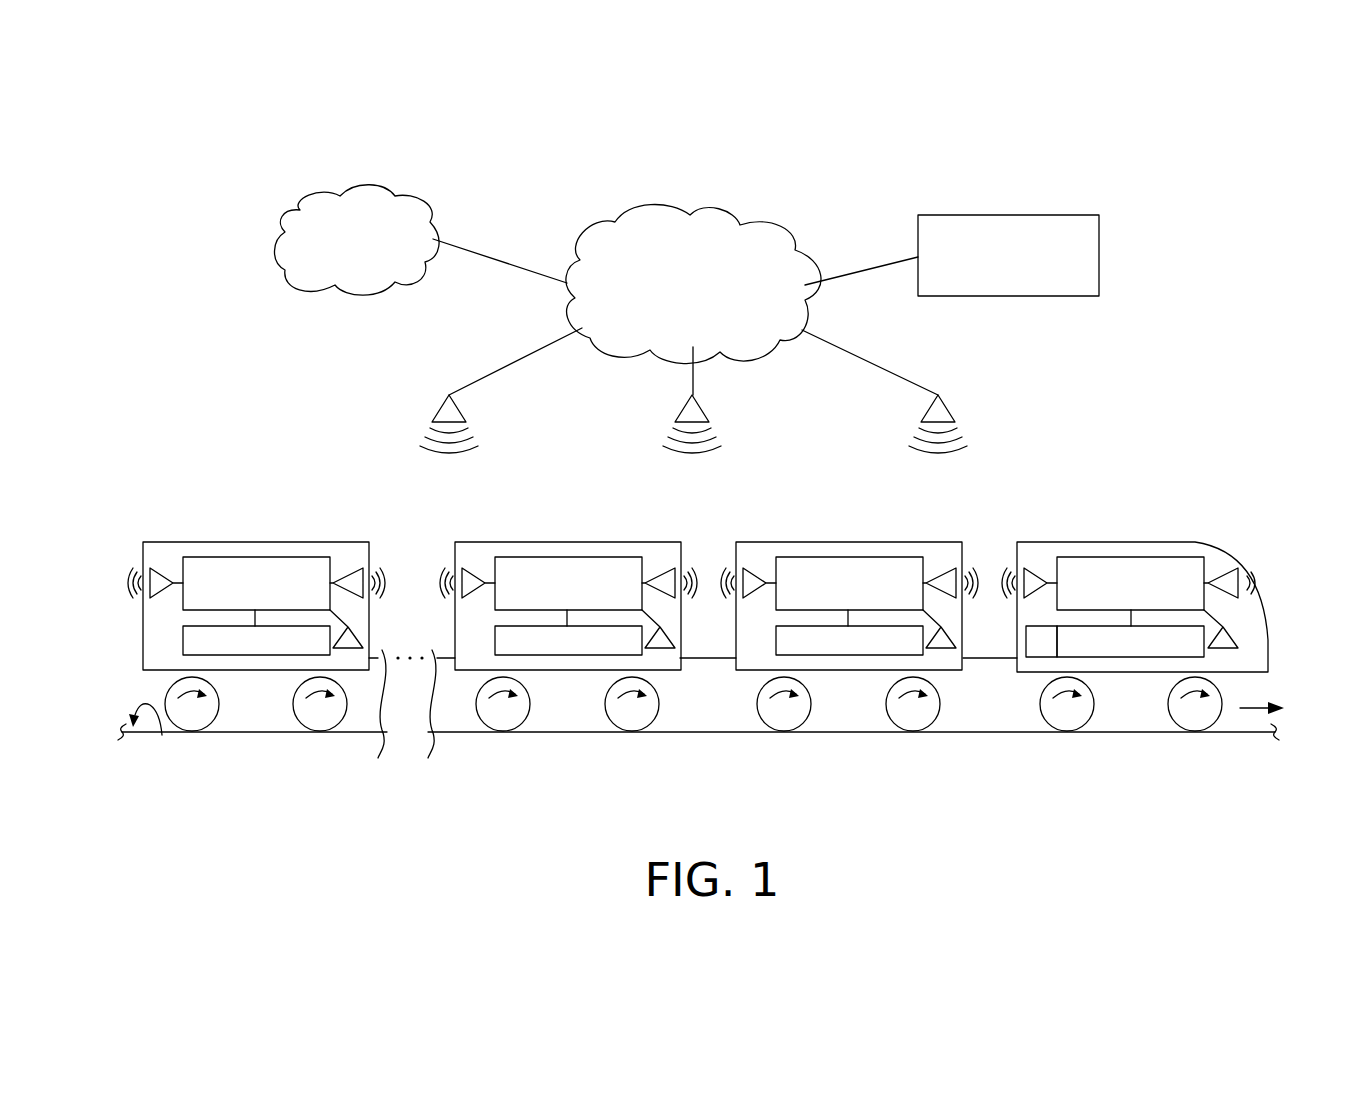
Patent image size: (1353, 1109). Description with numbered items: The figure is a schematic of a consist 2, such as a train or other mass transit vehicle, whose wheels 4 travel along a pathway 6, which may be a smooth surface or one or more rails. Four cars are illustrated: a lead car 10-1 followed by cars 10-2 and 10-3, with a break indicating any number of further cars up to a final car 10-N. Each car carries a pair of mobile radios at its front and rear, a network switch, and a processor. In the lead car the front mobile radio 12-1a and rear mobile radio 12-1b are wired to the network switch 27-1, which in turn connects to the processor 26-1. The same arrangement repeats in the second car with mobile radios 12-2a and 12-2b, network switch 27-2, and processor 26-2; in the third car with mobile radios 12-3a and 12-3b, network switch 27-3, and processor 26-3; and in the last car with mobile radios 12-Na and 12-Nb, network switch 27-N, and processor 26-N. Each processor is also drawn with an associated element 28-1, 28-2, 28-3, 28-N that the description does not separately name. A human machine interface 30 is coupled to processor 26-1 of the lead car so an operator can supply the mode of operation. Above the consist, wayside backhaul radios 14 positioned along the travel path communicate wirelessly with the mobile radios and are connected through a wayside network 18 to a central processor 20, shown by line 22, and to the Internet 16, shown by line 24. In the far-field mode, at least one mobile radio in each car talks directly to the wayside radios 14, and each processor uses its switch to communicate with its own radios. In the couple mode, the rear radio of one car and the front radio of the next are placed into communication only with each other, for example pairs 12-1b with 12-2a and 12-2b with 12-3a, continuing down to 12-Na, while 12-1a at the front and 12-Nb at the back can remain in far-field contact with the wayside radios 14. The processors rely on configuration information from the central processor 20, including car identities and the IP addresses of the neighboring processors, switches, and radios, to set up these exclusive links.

The consist 2 is at (298, 398).
The wheels 4 is at (190, 712).
The pathway 6 is at (162, 735).
The car 10-N is at (291, 616).
The car 10-3 is at (581, 645).
The car 10-2 is at (858, 638).
The car 10-1 is at (1130, 632).
The mobile radio 12-Nb is at (160, 565).
The mobile radio 12-Na is at (360, 580).
The mobile radio 12-3b is at (470, 572).
The mobile radio 12-3a is at (666, 572).
The mobile radio 12-2b is at (752, 572).
The mobile radio 12-2a is at (940, 572).
The mobile radio 12-1b is at (1035, 568).
The mobile radio 12-1a is at (1215, 572).
The wayside backhaul radio 14 is at (448, 407).
The Internet 16 is at (377, 210).
The wayside network 18 is at (693, 235).
The central processor 20 is at (1082, 243).
The line 22 is at (859, 270).
The line 24 is at (512, 268).
The processor 26-N is at (258, 656).
The processor 26-3 is at (557, 656).
The processor 26-2 is at (843, 656).
The processor 26-1 is at (1118, 657).
The network switch 27-N is at (263, 557).
The network switch 27-3 is at (613, 557).
The network switch 27-2 is at (905, 557).
The network switch 27-1 is at (1187, 557).
The processor antenna 28-N is at (350, 648).
The processor antenna 28-3 is at (661, 648).
The processor antenna 28-2 is at (945, 648).
The processor antenna 28-1 is at (1228, 648).
The human machine interface 30 is at (1035, 645).